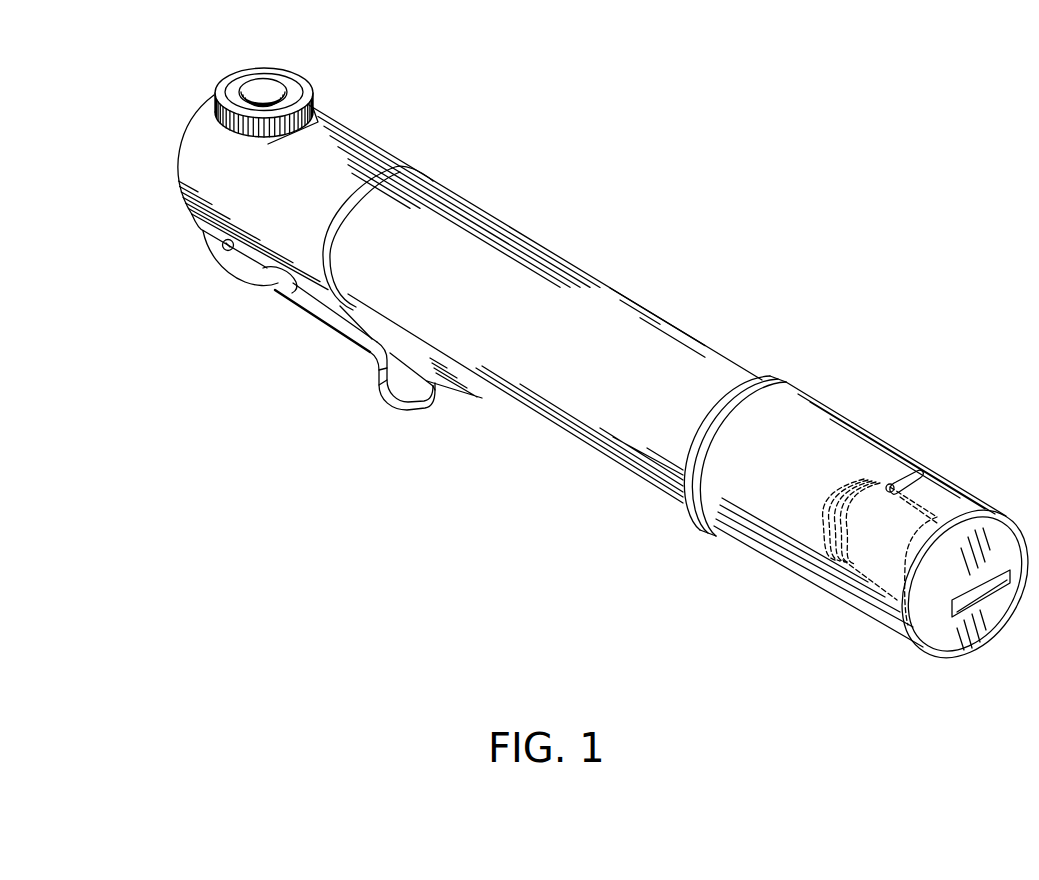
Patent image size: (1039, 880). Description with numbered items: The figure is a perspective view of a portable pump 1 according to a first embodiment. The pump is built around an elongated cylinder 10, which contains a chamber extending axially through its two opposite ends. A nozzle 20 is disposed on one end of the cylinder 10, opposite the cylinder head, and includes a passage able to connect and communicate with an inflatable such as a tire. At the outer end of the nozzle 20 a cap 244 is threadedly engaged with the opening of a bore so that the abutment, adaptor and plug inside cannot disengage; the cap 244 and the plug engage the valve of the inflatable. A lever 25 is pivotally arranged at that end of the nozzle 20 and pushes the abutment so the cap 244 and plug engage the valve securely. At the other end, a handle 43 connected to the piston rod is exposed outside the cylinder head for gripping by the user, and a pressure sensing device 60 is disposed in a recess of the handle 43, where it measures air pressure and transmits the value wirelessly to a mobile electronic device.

The portable pump 1 is at (792, 158).
The cylinder 10 is at (643, 298).
The nozzle 20 is at (395, 140).
The cap 244 is at (311, 88).
The lever 25 is at (413, 403).
The handle 43 is at (826, 425).
The pressure sensing device 60 is at (936, 512).